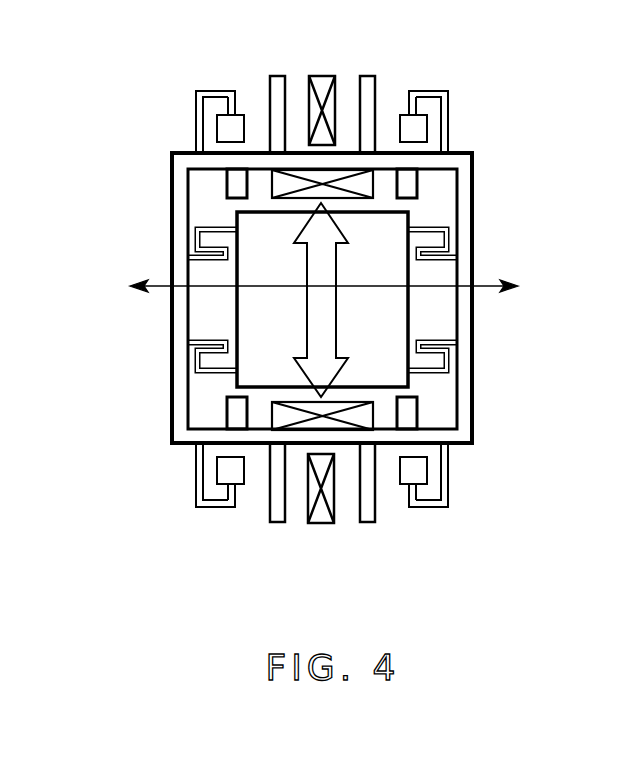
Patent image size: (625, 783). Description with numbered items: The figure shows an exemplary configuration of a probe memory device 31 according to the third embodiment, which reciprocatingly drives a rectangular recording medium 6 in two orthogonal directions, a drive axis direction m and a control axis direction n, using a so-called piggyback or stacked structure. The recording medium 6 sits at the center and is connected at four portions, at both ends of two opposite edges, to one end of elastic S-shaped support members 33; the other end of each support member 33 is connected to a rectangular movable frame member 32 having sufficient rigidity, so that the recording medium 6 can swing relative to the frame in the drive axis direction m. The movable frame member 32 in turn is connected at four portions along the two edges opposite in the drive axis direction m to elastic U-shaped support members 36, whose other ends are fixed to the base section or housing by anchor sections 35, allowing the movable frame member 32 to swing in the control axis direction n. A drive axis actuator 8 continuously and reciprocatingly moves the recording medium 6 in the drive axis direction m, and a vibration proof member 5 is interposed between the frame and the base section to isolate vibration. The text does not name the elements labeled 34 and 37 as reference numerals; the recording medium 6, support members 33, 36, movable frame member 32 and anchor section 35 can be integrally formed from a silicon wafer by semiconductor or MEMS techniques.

The probe memory device 31 is at (88, 375).
The movable frame member 32 is at (474, 200).
The support member 33 is at (195, 237).
The coil 34 is at (322, 76).
The anchor section 35 is at (238, 488).
The support member 36 is at (206, 508).
The yoke bar 37 is at (272, 524).
The vibration proof member 5 is at (227, 192).
The recording medium 6 is at (237, 320).
The drive axis actuator 8 is at (376, 184).
The drive axis direction m is at (306, 263).
The control axis direction n is at (478, 289).